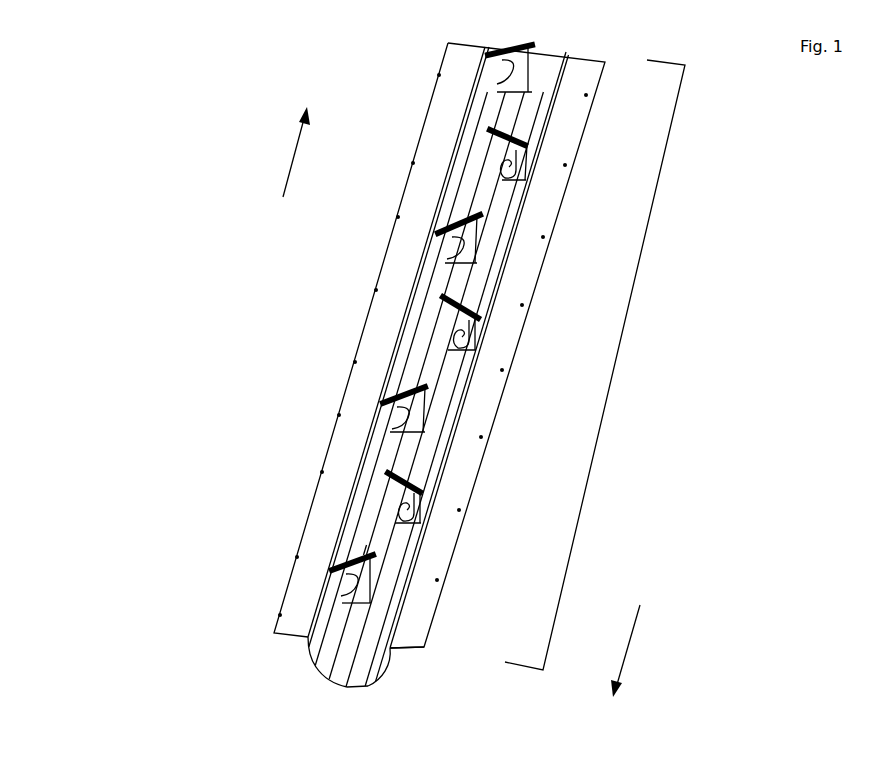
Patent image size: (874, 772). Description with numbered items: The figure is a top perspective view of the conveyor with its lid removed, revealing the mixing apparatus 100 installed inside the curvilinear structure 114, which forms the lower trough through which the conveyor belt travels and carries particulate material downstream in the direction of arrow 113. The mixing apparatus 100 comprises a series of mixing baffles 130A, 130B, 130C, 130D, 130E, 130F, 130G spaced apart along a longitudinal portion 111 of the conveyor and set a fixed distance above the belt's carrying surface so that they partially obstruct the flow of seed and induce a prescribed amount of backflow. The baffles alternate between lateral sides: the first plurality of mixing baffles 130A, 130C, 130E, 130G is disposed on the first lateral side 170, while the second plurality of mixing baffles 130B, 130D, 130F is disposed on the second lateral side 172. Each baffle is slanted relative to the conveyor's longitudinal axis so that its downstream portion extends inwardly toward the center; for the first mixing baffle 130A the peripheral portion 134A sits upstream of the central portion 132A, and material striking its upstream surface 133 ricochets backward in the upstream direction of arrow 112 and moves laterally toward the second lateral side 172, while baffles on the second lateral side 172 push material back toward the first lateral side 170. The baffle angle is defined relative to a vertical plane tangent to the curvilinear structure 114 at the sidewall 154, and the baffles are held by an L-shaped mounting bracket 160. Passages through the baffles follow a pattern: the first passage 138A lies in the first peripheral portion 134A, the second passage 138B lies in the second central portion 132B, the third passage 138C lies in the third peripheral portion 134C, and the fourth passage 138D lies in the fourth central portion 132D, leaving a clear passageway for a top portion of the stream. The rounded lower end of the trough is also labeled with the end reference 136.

The mixing apparatus 100 is at (227, 267).
The longitudinal portion 111 is at (619, 350).
The arrow 112 is at (641, 651).
The arrow 113 is at (308, 152).
The curvilinear structure 114 is at (387, 677).
The first mixing baffle 130A is at (358, 585).
The second mixing baffle 130B is at (392, 495).
The third mixing baffle 130C is at (407, 417).
The fourth mixing baffle 130D is at (445, 315).
The mixing baffle 130E is at (480, 253).
The mixing baffle 130F is at (528, 175).
The mixing baffle 130G is at (531, 73).
The central portion 132A is at (373, 558).
The second central portion 132B is at (388, 474).
The fourth central portion 132D is at (443, 303).
The upstream surface 133 is at (361, 596).
The first peripheral portion 134A is at (333, 570).
The third peripheral portion 134C is at (398, 406).
The rail first end 136 is at (318, 656).
The first passage 138A is at (341, 582).
The second passage 138B is at (396, 501).
The third passage 138C is at (391, 419).
The fourth passage 138D is at (449, 328).
The sidewall 154 is at (391, 652).
The L-shaped mounting bracket 160 is at (362, 552).
The first lateral side 170 is at (322, 672).
The second lateral side 172 is at (360, 688).